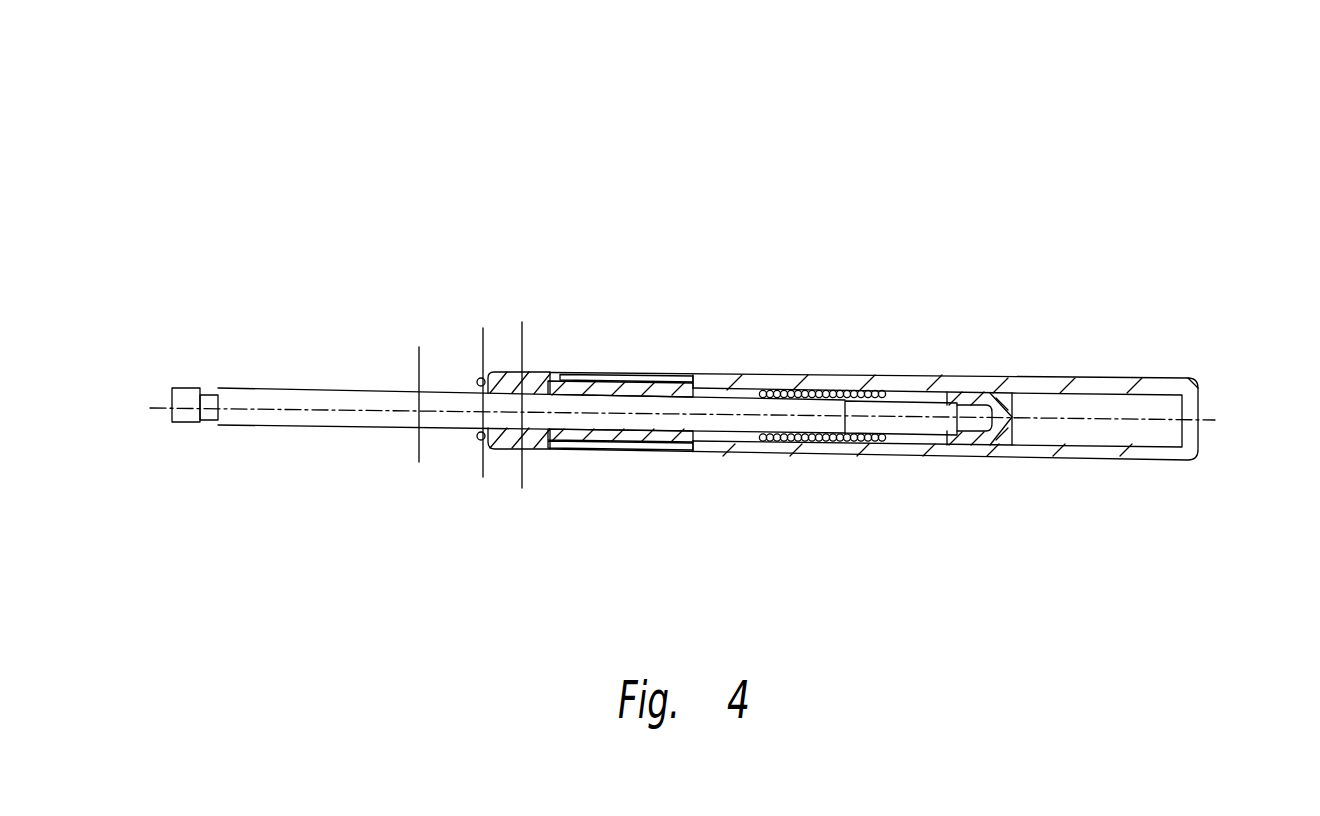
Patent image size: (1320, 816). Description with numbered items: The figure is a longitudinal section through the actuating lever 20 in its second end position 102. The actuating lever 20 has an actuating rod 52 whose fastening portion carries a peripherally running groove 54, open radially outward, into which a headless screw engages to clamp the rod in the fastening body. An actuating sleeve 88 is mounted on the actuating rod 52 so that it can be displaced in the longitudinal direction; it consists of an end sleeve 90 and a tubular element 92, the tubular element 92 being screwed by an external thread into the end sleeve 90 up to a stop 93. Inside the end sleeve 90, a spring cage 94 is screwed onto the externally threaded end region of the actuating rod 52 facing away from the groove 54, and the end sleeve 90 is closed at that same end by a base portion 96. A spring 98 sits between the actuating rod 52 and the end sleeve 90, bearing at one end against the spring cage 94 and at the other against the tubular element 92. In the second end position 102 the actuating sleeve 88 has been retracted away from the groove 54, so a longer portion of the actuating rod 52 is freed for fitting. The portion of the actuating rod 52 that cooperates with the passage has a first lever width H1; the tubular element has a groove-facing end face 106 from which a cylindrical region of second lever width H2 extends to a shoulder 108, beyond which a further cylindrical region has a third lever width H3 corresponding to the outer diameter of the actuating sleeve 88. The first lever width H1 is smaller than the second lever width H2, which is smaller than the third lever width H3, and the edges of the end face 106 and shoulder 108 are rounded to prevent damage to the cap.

The actuating lever 20 is at (518, 99).
The actuating rod 52 is at (172, 419).
The groove 54 is at (212, 387).
The actuating sleeve 88 is at (798, 288).
The end sleeve 90 is at (1107, 448).
The tubular element 92 is at (540, 449).
The stop 93 is at (560, 376).
The spring cage 94 is at (1008, 433).
The base portion 96 is at (1198, 433).
The spring 98 is at (855, 442).
The second end position 102 is at (465, 327).
The end face 106 is at (478, 380).
The shoulder 108 is at (488, 373).
The first lever width H1 is at (413, 428).
The second lever width H2 is at (478, 427).
The third lever width H3 is at (492, 448).